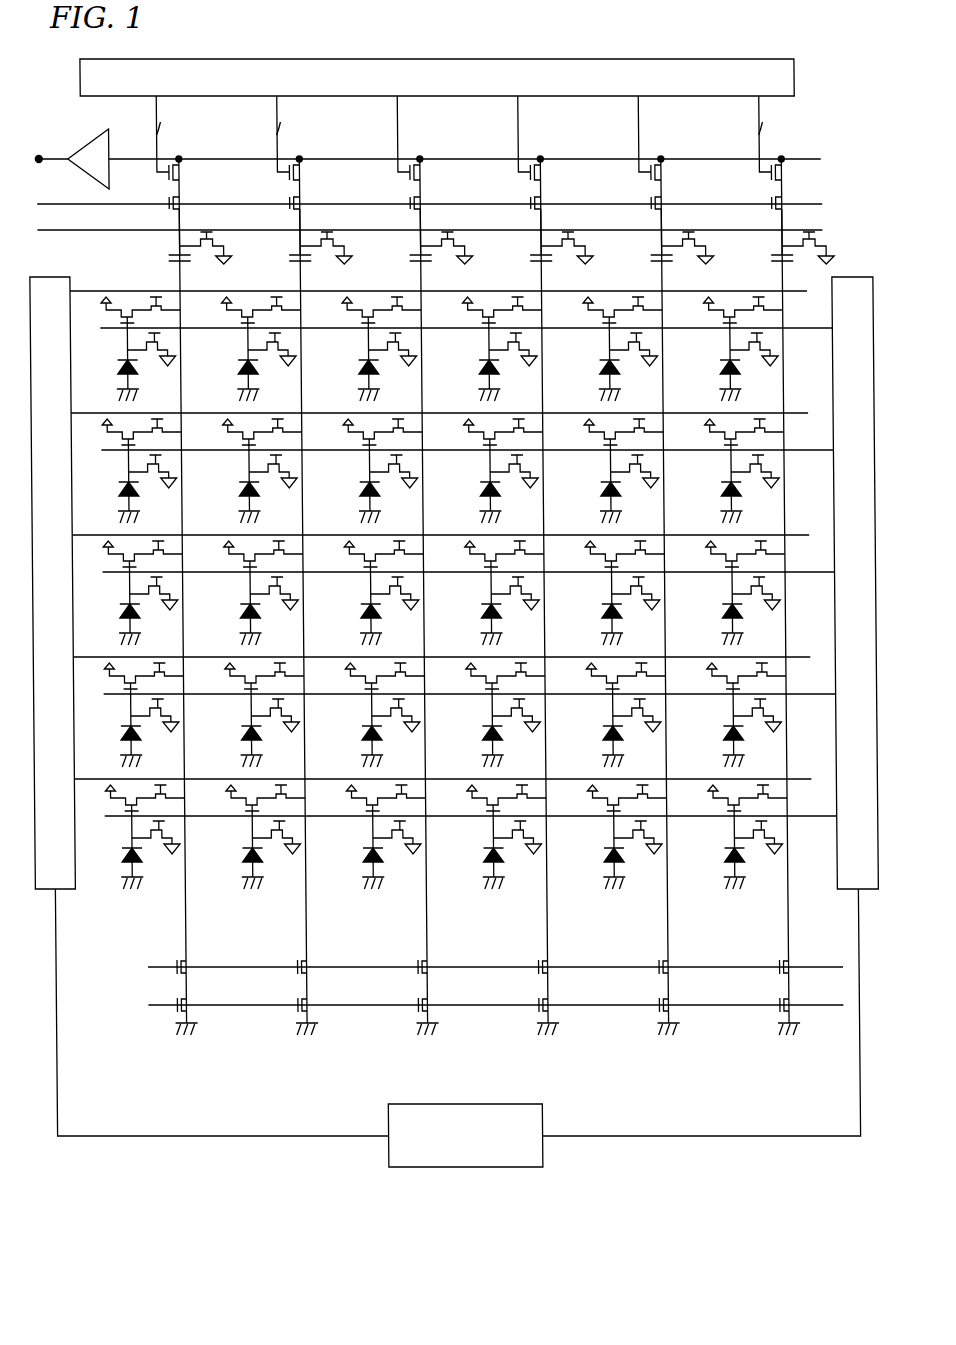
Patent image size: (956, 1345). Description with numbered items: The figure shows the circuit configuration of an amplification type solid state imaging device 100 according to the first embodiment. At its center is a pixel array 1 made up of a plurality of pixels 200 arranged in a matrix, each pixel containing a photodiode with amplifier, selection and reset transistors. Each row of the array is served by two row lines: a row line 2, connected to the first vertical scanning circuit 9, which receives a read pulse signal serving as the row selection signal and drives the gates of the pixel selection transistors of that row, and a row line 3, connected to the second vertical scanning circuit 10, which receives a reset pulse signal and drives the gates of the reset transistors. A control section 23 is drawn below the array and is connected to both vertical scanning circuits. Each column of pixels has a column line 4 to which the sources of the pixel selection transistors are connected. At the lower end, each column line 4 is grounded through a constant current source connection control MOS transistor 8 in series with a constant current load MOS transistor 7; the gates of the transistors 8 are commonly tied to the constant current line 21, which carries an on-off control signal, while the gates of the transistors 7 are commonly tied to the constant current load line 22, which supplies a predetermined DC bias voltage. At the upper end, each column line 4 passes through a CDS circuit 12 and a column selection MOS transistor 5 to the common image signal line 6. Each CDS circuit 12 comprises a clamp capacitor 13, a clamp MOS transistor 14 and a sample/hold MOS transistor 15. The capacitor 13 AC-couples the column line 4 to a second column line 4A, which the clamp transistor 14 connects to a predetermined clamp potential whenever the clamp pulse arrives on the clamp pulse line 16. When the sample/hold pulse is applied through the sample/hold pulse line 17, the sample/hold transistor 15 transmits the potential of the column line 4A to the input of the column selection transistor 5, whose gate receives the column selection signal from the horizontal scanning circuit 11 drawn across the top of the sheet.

The amplification type solid state imaging device 100 is at (817, 71).
The horizontal scanning circuit 11 is at (551, 58).
The image signal line 6 is at (135, 155).
The column selection MOS transistor 5 is at (784, 172).
The sample/hold MOS transistor 15 is at (772, 205).
The CDS circuit 12 is at (816, 212).
The clamp MOS transistor 14 is at (808, 232).
The column line 4A is at (780, 231).
The clamp capacitor 13 is at (773, 257).
The sample/hold pulse line 17 is at (103, 203).
The clamp pulse line 16 is at (87, 230).
The row line 2 is at (152, 777).
The pixel 200 is at (722, 864).
The row line 3 is at (800, 818).
The first vertical scanning circuit 9 is at (54, 893).
The second vertical scanning circuit 10 is at (855, 893).
The pixel array 1 is at (424, 651).
The column line 4 is at (808, 922).
The constant current source connection control MOS transistor 8 is at (776, 972).
The constant current load MOS transistor 7 is at (776, 1010).
The constant current line 21 is at (464, 968).
The constant current load line 22 is at (504, 1006).
The control section 23 is at (457, 1168).